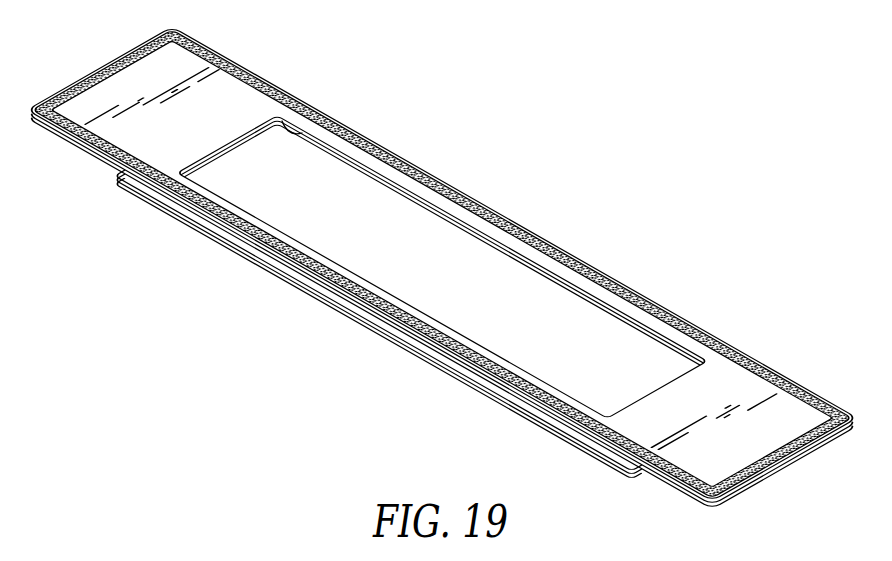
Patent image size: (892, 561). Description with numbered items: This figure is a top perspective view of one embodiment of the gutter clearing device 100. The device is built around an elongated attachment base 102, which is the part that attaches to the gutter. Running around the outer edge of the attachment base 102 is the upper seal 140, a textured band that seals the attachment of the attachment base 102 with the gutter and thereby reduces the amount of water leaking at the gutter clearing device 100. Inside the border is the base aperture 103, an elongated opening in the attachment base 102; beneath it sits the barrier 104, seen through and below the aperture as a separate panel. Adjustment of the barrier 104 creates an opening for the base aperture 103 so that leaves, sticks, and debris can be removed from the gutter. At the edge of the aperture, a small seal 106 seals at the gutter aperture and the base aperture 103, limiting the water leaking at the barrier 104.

The gutter clearing device 100 is at (442, 268).
The attachment base 102 is at (240, 103).
The base aperture 103 is at (388, 270).
The barrier 104 is at (373, 187).
The seal 106 is at (320, 118).
The upper seal 140 is at (470, 203).